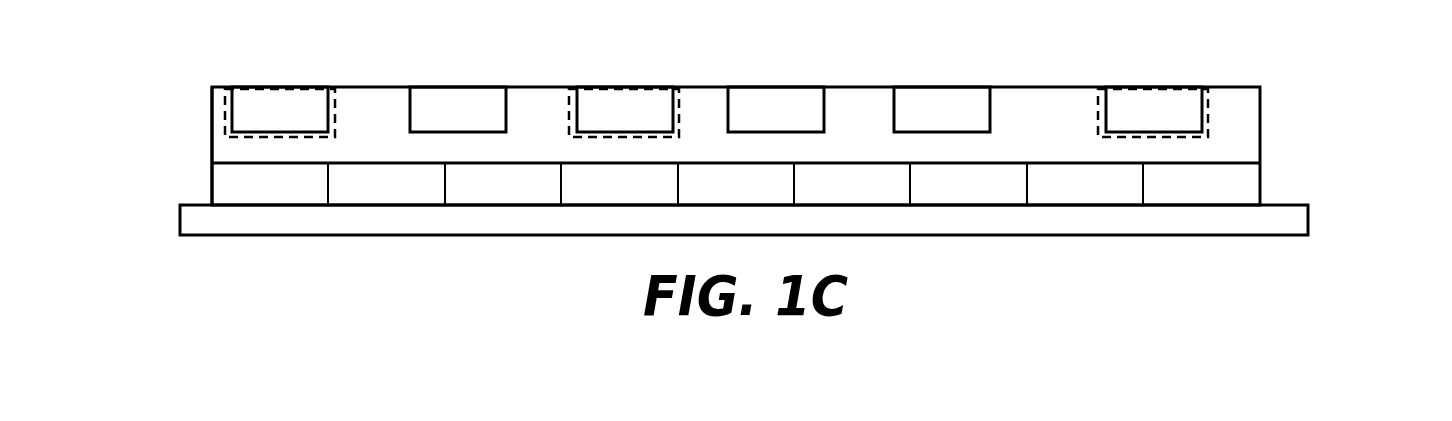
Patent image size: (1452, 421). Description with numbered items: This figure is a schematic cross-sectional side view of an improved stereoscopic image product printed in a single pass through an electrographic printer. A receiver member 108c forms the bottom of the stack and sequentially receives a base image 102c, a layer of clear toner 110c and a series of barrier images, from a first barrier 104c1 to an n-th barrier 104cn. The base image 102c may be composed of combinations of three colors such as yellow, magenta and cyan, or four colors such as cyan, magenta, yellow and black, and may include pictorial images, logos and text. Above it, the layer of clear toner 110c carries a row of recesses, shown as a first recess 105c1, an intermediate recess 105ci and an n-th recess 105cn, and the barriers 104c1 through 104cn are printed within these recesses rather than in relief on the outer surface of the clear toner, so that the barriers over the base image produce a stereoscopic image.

The base image 102c is at (1260, 185).
The first barrier image 104c1 is at (260, 87).
The first recess 105c1 is at (340, 105).
The i-th recess 105ci is at (680, 107).
The n-th barrier image 104cn is at (1128, 87).
The n-th recess 105cn is at (1210, 106).
The receiver member 108c is at (1308, 218).
The layer of clear toner 110c is at (212, 128).